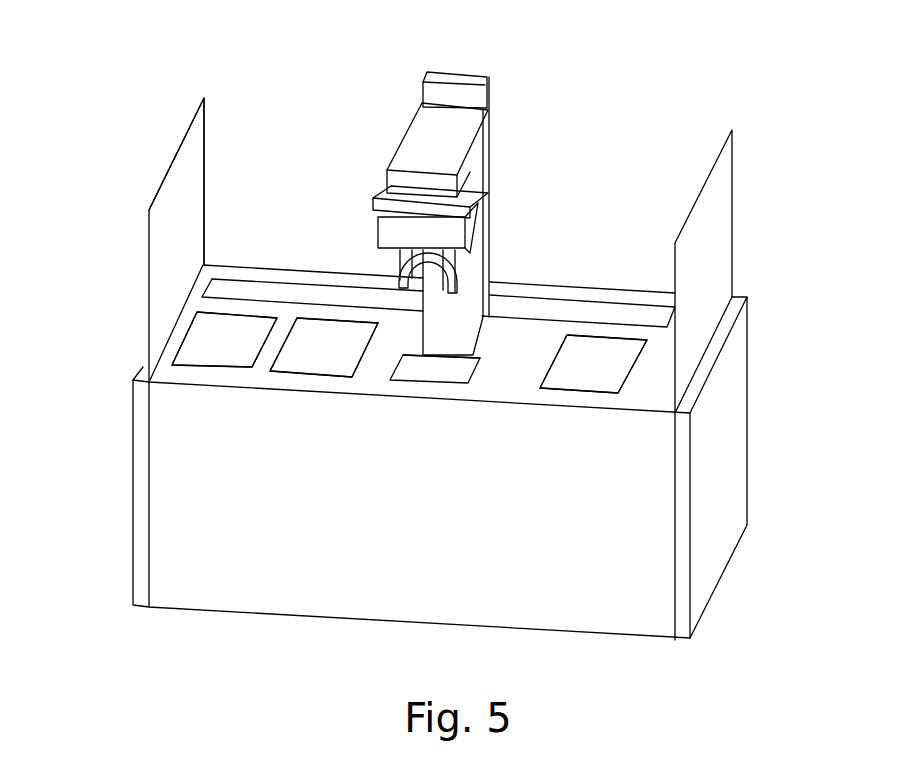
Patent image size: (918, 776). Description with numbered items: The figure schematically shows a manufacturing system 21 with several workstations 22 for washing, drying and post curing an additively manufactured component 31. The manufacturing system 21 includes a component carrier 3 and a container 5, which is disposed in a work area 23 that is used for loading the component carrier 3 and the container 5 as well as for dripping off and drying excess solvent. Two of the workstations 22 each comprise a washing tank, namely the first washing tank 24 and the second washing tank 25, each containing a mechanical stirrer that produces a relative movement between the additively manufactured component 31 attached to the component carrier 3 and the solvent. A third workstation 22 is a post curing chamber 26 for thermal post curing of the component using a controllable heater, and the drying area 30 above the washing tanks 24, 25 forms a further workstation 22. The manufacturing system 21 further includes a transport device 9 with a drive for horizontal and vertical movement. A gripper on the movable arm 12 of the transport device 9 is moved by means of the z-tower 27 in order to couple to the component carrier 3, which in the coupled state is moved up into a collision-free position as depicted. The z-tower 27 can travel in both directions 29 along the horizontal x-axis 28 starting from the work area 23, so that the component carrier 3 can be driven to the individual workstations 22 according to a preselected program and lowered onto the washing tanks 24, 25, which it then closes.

The manufacturing system 21 is at (257, 107).
The transport device 9 is at (458, 95).
The movable arm 12 is at (450, 136).
The directions 29 is at (597, 105).
The drying area 30 is at (303, 192).
The additively manufactured component 31 is at (397, 250).
The workstations 22 is at (233, 210).
The component carrier 3 is at (432, 232).
The z-tower 27 is at (455, 313).
The x-axis 28 is at (592, 312).
The first washing tank 24 is at (232, 335).
The second washing tank 25 is at (333, 347).
The container 5 is at (420, 365).
The work area 23 is at (447, 363).
The post curing chamber 26 is at (602, 362).